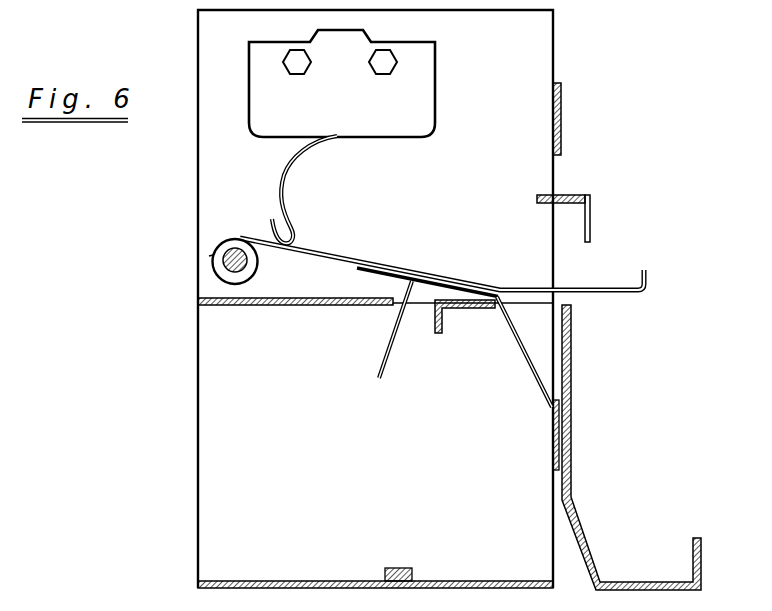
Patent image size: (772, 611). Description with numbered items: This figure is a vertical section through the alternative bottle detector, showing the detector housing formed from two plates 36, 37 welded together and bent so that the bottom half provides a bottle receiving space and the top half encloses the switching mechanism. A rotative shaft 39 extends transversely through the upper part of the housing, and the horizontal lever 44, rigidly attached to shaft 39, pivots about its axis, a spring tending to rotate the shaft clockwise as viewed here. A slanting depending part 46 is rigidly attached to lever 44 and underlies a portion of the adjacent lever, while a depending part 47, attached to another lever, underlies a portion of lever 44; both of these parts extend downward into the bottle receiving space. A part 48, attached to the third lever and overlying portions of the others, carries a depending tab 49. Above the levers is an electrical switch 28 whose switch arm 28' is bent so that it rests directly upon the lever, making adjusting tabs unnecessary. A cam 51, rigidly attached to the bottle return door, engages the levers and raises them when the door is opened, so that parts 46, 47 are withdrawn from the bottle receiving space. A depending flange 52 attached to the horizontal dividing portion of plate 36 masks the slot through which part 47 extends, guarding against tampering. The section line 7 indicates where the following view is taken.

The section line 7— 7 is at (138, 233).
The electrical switch 28 is at (342, 74).
The switch arm 28' is at (307, 189).
The plate 36 is at (204, 374).
The plate 37 is at (568, 110).
The rotative shaft 39 is at (248, 258).
The lever 44 is at (326, 247).
The slanting depending part 46 is at (522, 344).
The depending part 47 is at (397, 334).
The part 48 is at (547, 205).
The depending tab 49 is at (591, 212).
The cam 51 is at (581, 524).
The depending flange 52 is at (443, 320).